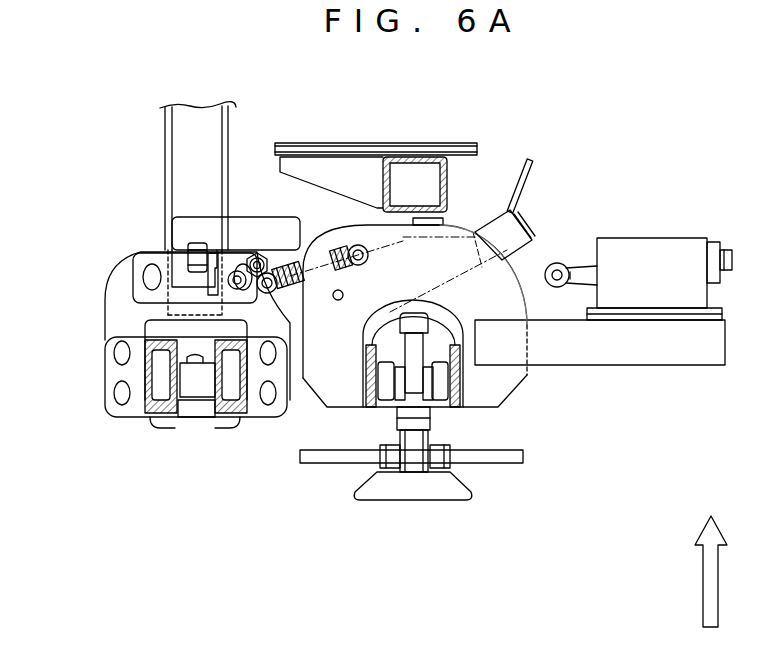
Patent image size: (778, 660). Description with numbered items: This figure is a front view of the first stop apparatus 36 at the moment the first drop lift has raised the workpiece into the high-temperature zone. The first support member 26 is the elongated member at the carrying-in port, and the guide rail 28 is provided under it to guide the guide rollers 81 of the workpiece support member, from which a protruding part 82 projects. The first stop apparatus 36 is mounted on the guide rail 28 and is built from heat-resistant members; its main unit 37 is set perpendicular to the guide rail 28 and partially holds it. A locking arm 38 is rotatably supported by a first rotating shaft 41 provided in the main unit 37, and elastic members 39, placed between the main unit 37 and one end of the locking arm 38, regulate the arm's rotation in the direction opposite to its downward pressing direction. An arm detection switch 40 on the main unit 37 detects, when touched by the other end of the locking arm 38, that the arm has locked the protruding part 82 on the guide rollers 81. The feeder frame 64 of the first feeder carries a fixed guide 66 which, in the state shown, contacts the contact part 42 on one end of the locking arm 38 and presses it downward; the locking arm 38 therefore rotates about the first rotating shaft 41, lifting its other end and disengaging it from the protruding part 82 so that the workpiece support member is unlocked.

The first support member 26 is at (412, 150).
The guide rail 28 is at (458, 410).
The first stop apparatus 36 is at (478, 190).
The main unit 37 is at (503, 277).
The locking arm 38 is at (520, 216).
The elastic member 39 is at (300, 268).
The arm detection switch 40 is at (655, 245).
The first rotating shaft 41 is at (343, 292).
The contact part 42 is at (262, 254).
The feeder frame 64 is at (118, 303).
The fixed guide 66 is at (180, 222).
The guide roller 81 is at (385, 380).
The protruding part 82 is at (417, 322).